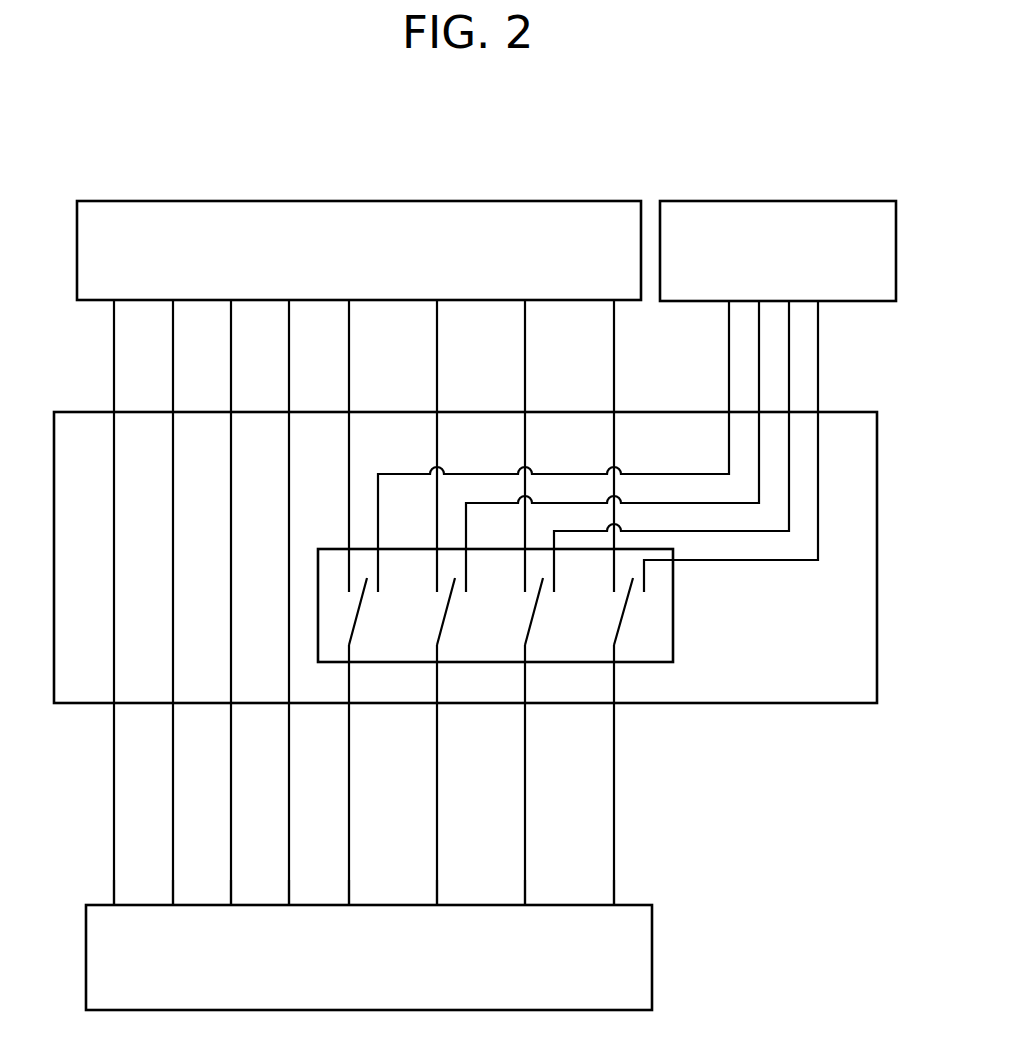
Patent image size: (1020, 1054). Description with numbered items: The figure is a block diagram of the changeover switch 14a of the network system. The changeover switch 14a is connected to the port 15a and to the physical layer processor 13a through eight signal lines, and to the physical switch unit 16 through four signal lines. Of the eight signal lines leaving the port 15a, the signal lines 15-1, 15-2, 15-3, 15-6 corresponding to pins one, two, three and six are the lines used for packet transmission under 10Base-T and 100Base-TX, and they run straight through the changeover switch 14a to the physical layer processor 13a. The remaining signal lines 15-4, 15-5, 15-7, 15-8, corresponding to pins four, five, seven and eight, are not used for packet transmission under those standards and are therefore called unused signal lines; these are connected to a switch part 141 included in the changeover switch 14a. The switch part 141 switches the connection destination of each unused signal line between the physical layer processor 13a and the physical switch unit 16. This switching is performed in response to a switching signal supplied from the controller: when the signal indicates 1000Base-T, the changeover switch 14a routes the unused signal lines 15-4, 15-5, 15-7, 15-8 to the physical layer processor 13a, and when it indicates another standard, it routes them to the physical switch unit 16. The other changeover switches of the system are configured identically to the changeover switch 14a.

The physical layer processor 13a is at (503, 201).
The physical switch unit 16 is at (826, 201).
The changeover switch 14a is at (73, 412).
The switch part 141 is at (673, 631).
The port 15a is at (652, 942).
The signal line 15-1 is at (114, 865).
The signal line 15-2 is at (173, 835).
The signal line 15-3 is at (231, 800).
The unused signal line 15-4 is at (349, 752).
The unused signal line 15-5 is at (437, 793).
The signal line 15-6 is at (289, 757).
The unused signal line 15-7 is at (525, 830).
The unused signal line 15-8 is at (614, 870).